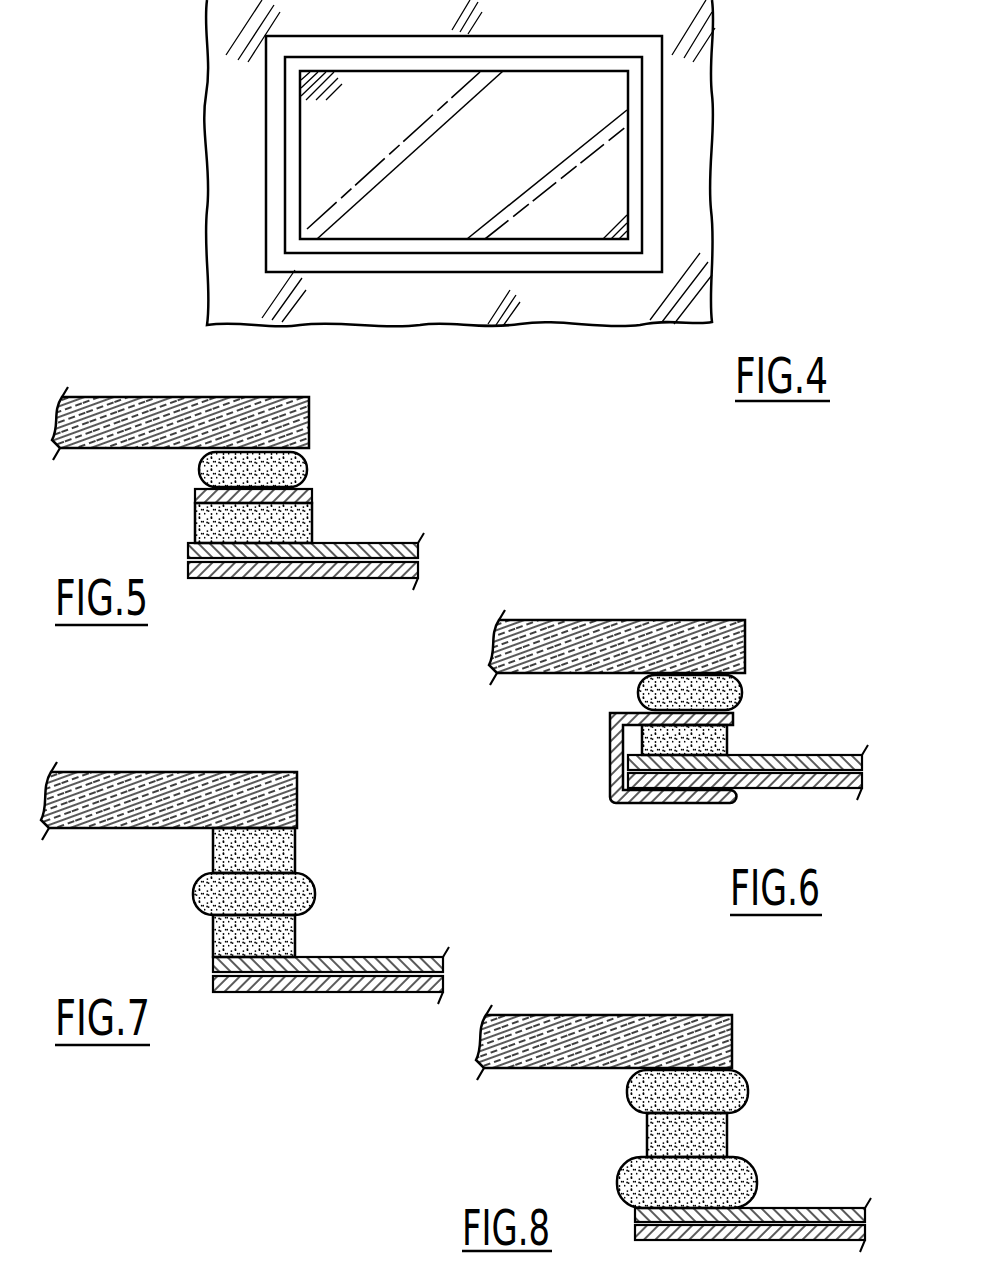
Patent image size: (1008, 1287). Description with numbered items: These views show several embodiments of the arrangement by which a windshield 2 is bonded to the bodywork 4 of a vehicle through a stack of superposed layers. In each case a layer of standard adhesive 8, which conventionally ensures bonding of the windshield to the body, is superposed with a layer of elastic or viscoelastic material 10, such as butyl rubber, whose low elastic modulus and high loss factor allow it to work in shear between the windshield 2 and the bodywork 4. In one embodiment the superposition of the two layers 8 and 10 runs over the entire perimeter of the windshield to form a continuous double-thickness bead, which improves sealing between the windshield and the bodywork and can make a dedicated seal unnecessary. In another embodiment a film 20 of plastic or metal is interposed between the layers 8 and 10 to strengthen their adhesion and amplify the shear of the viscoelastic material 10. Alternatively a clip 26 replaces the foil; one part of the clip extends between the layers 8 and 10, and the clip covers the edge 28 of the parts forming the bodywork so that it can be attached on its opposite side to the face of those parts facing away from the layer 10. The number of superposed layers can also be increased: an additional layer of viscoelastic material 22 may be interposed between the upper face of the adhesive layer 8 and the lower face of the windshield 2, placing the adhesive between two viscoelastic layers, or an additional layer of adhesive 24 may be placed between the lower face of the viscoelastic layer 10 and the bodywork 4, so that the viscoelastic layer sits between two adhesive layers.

In FIG. 4, the windshield 2 is at (603, 197).
In FIG. 5, the windshield 2 is at (143, 425).
In FIG. 6, the windshield 2 is at (635, 645).
In FIG. 7, the windshield 2 is at (178, 795).
In FIG. 8, the windshield 2 is at (603, 1043).
In FIG. 4, the bodywork 4 is at (696, 112).
In FIG. 5, the bodywork 4 is at (362, 570).
In FIG. 6, the bodywork 4 is at (803, 783).
In FIG. 7, the bodywork 4 is at (331, 975).
In FIG. 8, the bodywork 4 is at (807, 1232).
In FIG. 4, the layer of standard adhesive 8 is at (652, 78).
In FIG. 5, the layer of standard adhesive 8 is at (210, 467).
In FIG. 6, the layer of standard adhesive 8 is at (735, 688).
In FIG. 7, the layer of standard adhesive 8 is at (293, 888).
In FIG. 8, the layer of standard adhesive 8 is at (720, 1083).
In FIG. 4, the layer of viscoelastic material 10 is at (464, 155).
In FIG. 5, the layer of viscoelastic material 10 is at (252, 527).
In FIG. 6, the layer of viscoelastic material 10 is at (703, 742).
In FIG. 7, the layer of viscoelastic material 10 is at (273, 935).
In FIG. 8, the layer of viscoelastic material 10 is at (710, 1132).
In FIG. 5, the film 20 is at (308, 497).
In FIG. 7, the additional layer of viscoelastic material 22 is at (275, 845).
In FIG. 8, the additional layer of adhesive 24 is at (735, 1178).
In FIG. 6, the clip 26 is at (737, 718).
In FIG. 6, the edge 28 is at (617, 763).